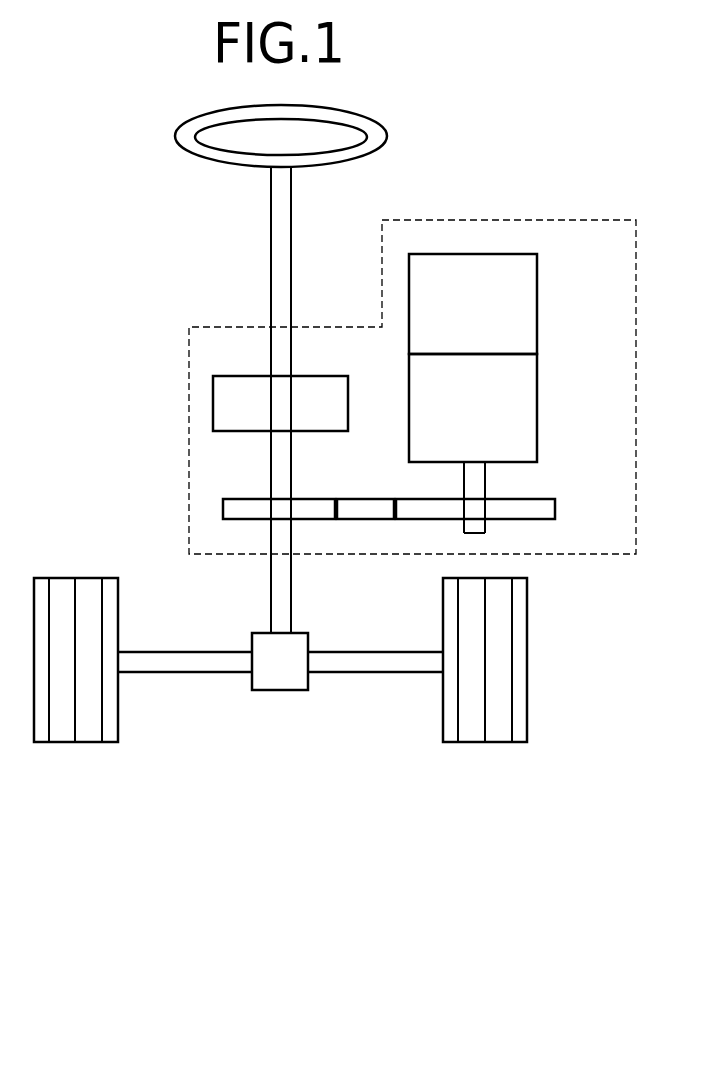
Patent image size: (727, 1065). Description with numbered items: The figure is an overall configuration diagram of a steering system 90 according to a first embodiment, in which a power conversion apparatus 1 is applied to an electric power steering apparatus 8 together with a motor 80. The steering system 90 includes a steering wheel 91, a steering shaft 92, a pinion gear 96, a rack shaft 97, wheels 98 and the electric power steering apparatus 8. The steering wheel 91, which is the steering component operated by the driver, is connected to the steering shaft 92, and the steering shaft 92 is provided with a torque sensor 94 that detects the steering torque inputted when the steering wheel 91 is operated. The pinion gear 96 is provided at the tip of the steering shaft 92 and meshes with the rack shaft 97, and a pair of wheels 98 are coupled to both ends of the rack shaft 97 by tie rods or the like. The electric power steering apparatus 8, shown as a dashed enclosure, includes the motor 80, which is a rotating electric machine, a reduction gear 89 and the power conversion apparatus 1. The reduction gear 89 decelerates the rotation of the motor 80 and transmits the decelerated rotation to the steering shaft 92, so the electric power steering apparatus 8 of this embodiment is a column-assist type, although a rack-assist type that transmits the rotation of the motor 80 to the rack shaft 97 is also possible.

The power conversion apparatus 1 is at (537, 283).
The electric power steering apparatus 8 is at (583, 220).
The motor 80 is at (537, 386).
The reduction gear 89 is at (555, 507).
The steering system 90 is at (243, 818).
The steering wheel 91 is at (176, 136).
The steering shaft 92 is at (271, 222).
The torque sensor 94 is at (213, 390).
The pinion gear 96 is at (271, 690).
The rack shaft 97 is at (178, 672).
The wheels 98 is at (92, 742).